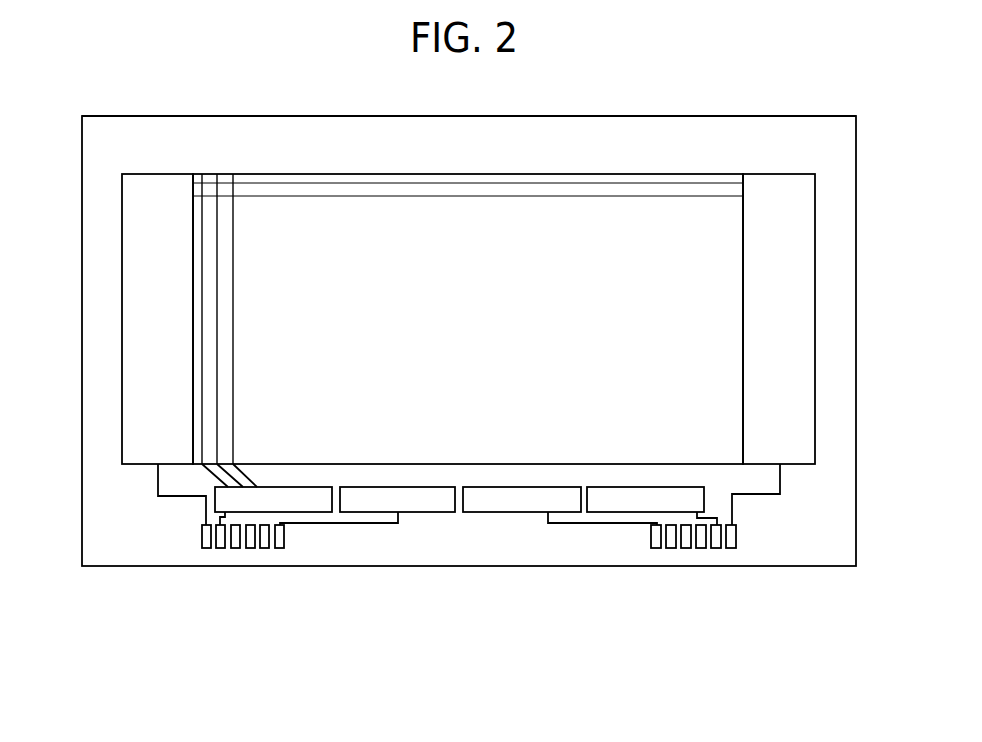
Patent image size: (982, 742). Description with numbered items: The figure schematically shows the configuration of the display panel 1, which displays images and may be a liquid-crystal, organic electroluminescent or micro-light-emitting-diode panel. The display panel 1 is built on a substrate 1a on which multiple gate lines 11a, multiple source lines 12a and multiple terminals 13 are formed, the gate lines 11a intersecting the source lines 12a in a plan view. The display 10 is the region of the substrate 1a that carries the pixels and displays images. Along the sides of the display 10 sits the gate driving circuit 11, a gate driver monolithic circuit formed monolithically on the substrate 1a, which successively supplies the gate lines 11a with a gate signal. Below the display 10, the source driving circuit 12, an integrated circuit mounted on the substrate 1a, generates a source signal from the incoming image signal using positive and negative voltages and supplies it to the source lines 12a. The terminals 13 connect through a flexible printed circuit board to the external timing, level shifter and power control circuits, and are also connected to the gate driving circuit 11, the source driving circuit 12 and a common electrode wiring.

The display panel 1 is at (64, 82).
The substrate 1a is at (702, 115).
The display 10 is at (523, 174).
The gate driving circuit 11 is at (146, 187).
The gate lines 11a is at (348, 183).
The source driving circuit 12 is at (317, 505).
The source lines 12a is at (217, 192).
The terminals 13 is at (206, 548).